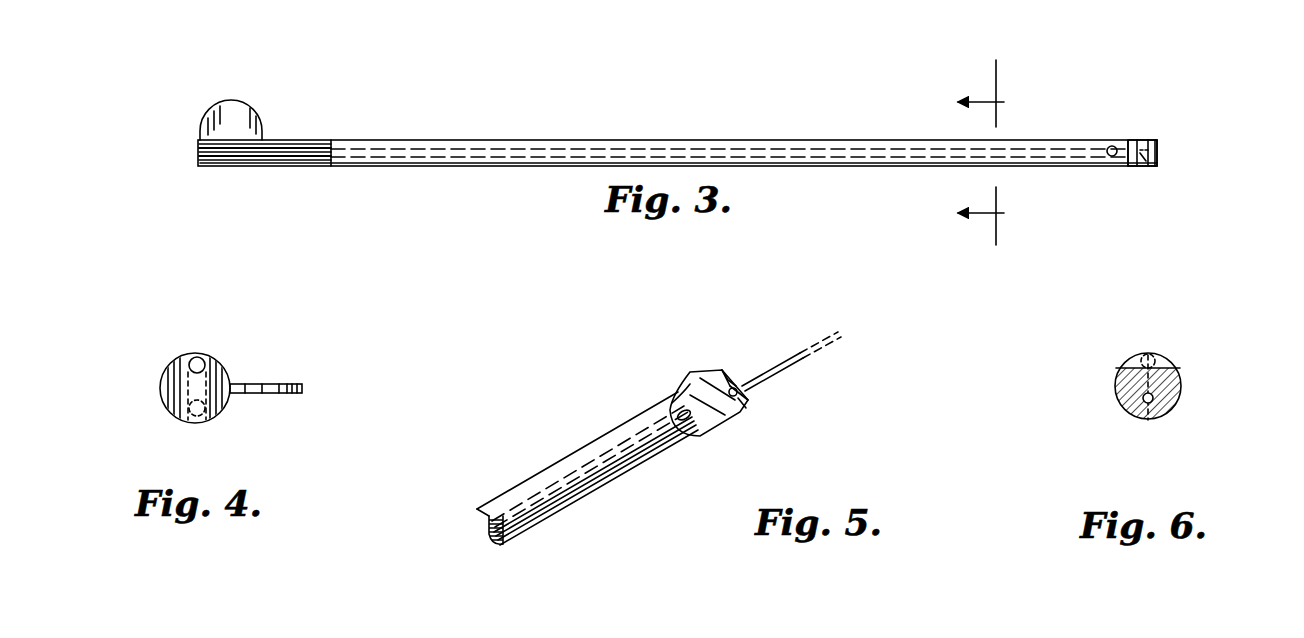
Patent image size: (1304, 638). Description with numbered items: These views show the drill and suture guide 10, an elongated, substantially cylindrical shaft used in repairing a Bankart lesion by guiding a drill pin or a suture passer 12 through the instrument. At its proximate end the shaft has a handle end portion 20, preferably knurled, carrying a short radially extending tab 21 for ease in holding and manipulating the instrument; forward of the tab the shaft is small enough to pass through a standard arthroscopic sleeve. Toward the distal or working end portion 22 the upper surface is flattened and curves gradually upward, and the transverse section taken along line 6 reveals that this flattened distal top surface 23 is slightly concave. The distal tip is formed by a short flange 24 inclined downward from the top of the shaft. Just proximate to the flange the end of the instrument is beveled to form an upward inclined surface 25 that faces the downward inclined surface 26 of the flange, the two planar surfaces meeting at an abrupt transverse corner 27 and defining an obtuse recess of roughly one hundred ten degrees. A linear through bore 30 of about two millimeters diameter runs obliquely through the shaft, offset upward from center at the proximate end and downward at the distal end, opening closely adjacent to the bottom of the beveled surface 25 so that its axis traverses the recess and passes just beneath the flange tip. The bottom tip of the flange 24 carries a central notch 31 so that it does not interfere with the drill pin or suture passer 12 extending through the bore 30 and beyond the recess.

In FIG. 3, the section line 6- 6 is at (987, 152).
In FIG. 3, the drill and suture guide 10 is at (600, 137).
In FIG. 4, the drill and suture guide 10 is at (165, 355).
In FIG. 5, the drill and suture guide 10 is at (510, 478).
In FIG. 6, the drill and suture guide 10 is at (1112, 386).
In FIG. 5, the suture passer 12 is at (850, 336).
In FIG. 3, the proximate handle end portion 20 is at (300, 141).
In FIG. 3, the radially extending tab 21 is at (240, 114).
In FIG. 4, the radially extending tab 21 is at (278, 384).
In FIG. 3, the distal end portion 22 is at (1160, 138).
In FIG. 5, the distal end portion 22 is at (688, 372).
In FIG. 6, the flattened distal top surface 23 is at (1152, 362).
In FIG. 3, the flange 24 is at (1156, 166).
In FIG. 5, the flange 24 is at (722, 380).
In FIG. 3, the beveled surface 25 is at (1122, 162).
In FIG. 5, the beveled surface 25 is at (680, 400).
In FIG. 3, the downward inclined surface 26 is at (1138, 140).
In FIG. 5, the downward inclined surface 26 is at (738, 410).
In FIG. 3, the corner 27 is at (1141, 167).
In FIG. 3, the through bore 30 is at (690, 150).
In FIG. 4, the through bore 30 is at (200, 358).
In FIG. 5, the through bore 30 is at (683, 420).
In FIG. 6, the through bore 30 is at (1152, 398).
In FIG. 3, the central notch 31 is at (1156, 150).
In FIG. 5, the central notch 31 is at (737, 393).